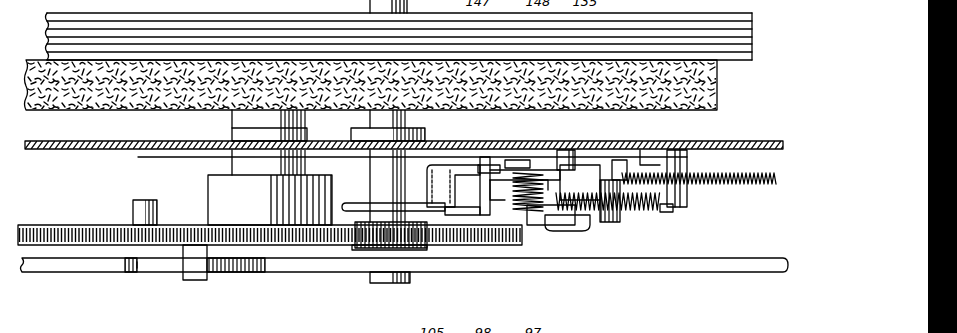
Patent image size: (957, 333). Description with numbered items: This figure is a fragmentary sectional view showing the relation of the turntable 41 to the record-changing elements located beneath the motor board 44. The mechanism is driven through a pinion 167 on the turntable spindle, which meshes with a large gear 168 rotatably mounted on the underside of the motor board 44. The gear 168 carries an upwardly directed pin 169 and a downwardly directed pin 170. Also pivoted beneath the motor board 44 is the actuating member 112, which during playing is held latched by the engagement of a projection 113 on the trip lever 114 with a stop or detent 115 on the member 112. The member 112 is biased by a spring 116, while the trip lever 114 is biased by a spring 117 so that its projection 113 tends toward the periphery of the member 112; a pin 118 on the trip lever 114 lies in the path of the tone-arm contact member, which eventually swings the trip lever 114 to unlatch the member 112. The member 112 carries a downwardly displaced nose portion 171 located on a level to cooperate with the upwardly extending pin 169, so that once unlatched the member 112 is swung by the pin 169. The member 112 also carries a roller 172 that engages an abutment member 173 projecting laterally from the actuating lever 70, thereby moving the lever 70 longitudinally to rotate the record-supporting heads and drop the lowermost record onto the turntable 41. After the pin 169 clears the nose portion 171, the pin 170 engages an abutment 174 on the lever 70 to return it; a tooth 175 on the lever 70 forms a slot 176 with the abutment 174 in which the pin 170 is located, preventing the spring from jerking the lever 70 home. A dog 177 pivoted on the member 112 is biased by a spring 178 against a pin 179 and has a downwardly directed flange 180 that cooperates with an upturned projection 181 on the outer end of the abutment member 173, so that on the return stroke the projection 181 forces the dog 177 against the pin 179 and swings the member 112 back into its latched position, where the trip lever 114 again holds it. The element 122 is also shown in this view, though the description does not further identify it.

The turntable 41 is at (718, 96).
The motor board 44 is at (485, 140).
The actuating lever 70 is at (690, 274).
The actuating member 112 is at (566, 172).
The projection 113 is at (482, 173).
The trip lever 114 is at (618, 170).
The stop or detent 115 is at (493, 165).
The spring 116 is at (735, 185).
The spring 117 is at (640, 213).
The pin 118 is at (610, 205).
The bracket 122 is at (650, 150).
The pinion 167 is at (428, 247).
The large gear 168 is at (253, 238).
The upwardly directed pin 169 is at (137, 210).
The downwardly directed pin 170 is at (202, 276).
The nose portion 171 is at (355, 212).
The roller 172 is at (440, 181).
The abutment member 173 is at (523, 214).
The abutment 174 is at (152, 266).
The tooth 175 is at (223, 272).
The slot 176 is at (180, 275).
The dog 177 is at (532, 170).
The spring 178 is at (517, 200).
The pin 179 is at (513, 170).
The flange 180 is at (553, 220).
The upturned projection 181 is at (463, 212).